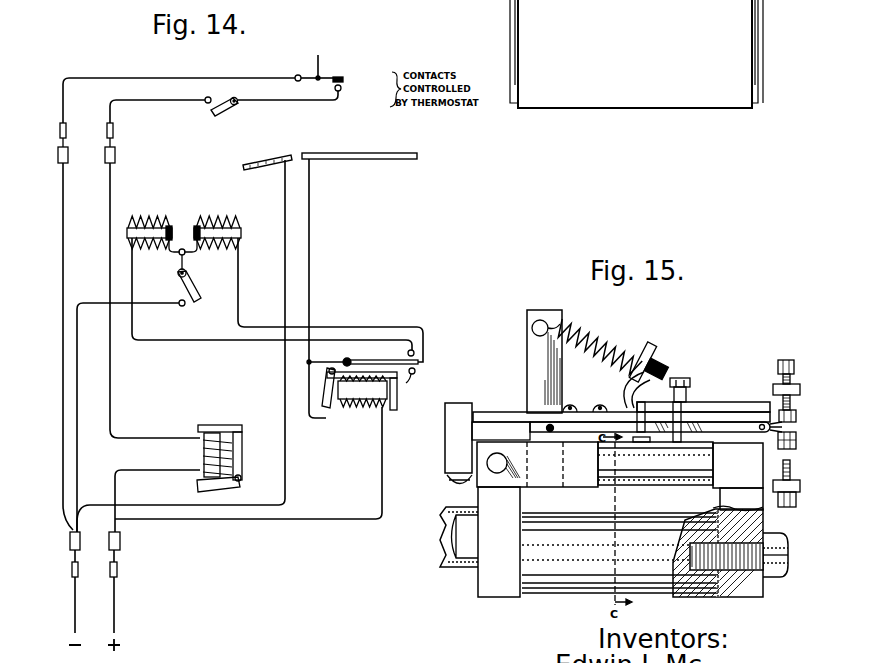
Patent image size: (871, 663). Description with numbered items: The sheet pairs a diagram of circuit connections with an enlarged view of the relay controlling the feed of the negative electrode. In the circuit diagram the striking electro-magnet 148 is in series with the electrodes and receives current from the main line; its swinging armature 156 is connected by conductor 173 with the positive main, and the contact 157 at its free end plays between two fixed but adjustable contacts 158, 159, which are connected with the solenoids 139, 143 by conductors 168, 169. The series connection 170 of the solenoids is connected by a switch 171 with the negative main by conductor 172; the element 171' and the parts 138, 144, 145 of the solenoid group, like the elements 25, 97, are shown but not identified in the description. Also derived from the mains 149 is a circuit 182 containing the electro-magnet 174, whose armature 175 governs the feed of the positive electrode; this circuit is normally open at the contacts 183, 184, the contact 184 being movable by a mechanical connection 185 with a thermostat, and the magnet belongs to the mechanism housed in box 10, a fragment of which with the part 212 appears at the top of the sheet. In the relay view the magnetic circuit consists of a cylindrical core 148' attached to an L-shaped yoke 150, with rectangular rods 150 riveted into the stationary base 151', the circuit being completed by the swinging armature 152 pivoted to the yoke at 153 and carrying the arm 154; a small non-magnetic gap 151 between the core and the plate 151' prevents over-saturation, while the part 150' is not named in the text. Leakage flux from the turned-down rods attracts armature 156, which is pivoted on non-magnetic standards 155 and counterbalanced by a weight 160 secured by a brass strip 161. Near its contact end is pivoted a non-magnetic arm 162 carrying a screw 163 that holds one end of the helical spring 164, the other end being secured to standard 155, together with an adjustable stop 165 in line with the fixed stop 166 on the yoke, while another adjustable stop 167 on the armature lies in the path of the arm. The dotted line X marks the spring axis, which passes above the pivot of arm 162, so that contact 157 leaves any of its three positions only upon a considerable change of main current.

In FIG. 15, the box 10 is at (636, 54).
In FIG. 15, the casing part 212 is at (717, 4).
In FIG. 14, the contact plate 25 is at (345, 149).
In FIG. 14, the contact plate 97 is at (274, 158).
In FIG. 14, the relay core 138 is at (243, 233).
In FIG. 14, the solenoid 139 is at (228, 222).
In FIG. 14, the solenoid 143 is at (142, 222).
In FIG. 14, the pole piece 144 is at (197, 224).
In FIG. 14, the pole piece 145 is at (173, 224).
In FIG. 14, the striking electro-magnet 148 is at (256, 445).
In FIG. 14, the cylindrical core 148' is at (378, 395).
In FIG. 15, the cylindrical core 148' is at (620, 553).
In FIG. 14, the mains 149 is at (116, 622).
In FIG. 15, the L-shaped yoke 150 is at (537, 464).
In FIG. 15, the sleeve 150' is at (655, 463).
In FIG. 15, the non-magnetic gap 151 is at (738, 574).
In FIG. 15, the stationary base 151' is at (714, 529).
In FIG. 15, the swinging armature 152 is at (502, 590).
In FIG. 15, the pivot 153 is at (491, 470).
In FIG. 15, the arm 154 is at (446, 549).
In FIG. 15, the fixed standards 155 is at (527, 368).
In FIG. 14, the swinging armature 156 is at (367, 358).
In FIG. 15, the swinging armature 156 is at (735, 420).
In FIG. 14, the contact 157 is at (420, 362).
In FIG. 15, the contact 157 is at (778, 414).
In FIG. 14, the fixed adjustable contact 158 is at (418, 355).
In FIG. 15, the fixed adjustable contact 158 is at (778, 367).
In FIG. 14, the fixed adjustable contact 159 is at (419, 384).
In FIG. 15, the fixed adjustable contact 159 is at (786, 509).
In FIG. 15, the weight 160 is at (447, 447).
In FIG. 15, the brass strip 161 is at (491, 412).
In FIG. 15, the arm 162 is at (708, 401).
In FIG. 15, the screw 163 is at (650, 346).
In FIG. 15, the helical spring 164 is at (610, 342).
In FIG. 15, the adjustable stop 165 is at (684, 379).
In FIG. 15, the fixed stop 166 is at (688, 440).
In FIG. 15, the adjustable stop 167 is at (628, 405).
In FIG. 14, the conductor 168 is at (345, 328).
In FIG. 14, the conductor 169 is at (198, 341).
In FIG. 14, the series connection 170 is at (186, 256).
In FIG. 14, the switch 171 is at (205, 285).
In FIG. 14, the contact 171' is at (189, 315).
In FIG. 14, the conductor 172 is at (78, 449).
In FIG. 14, the conductor 173 is at (328, 362).
In FIG. 14, the electro-magnet 174 is at (196, 456).
In FIG. 14, the armature 175 is at (196, 488).
In FIG. 14, the circuit 182 is at (208, 78).
In FIG. 14, the contact 183 is at (342, 91).
In FIG. 14, the contact 184 is at (344, 80).
In FIG. 14, the mechanical connection 185 is at (320, 64).
In FIG. 15, the dotted line X is at (540, 328).